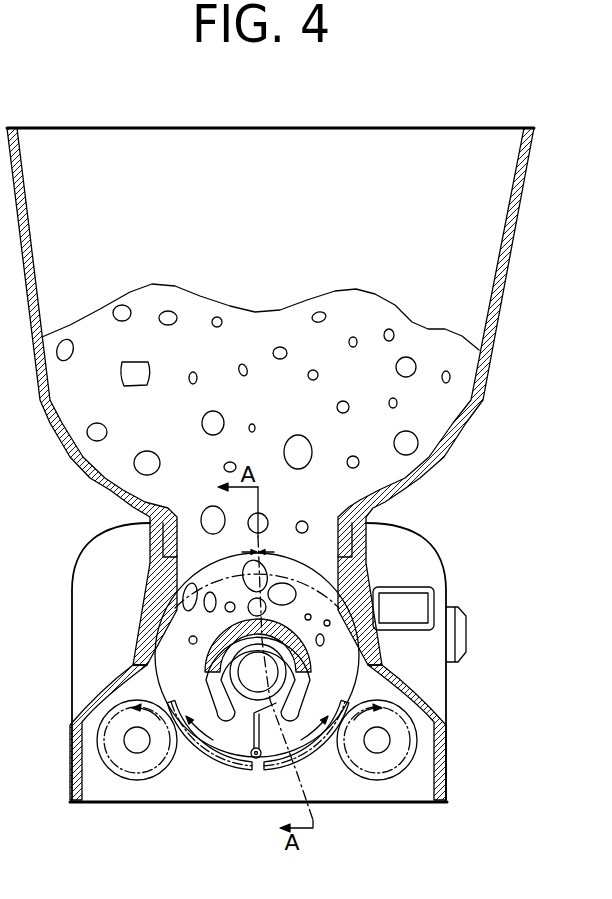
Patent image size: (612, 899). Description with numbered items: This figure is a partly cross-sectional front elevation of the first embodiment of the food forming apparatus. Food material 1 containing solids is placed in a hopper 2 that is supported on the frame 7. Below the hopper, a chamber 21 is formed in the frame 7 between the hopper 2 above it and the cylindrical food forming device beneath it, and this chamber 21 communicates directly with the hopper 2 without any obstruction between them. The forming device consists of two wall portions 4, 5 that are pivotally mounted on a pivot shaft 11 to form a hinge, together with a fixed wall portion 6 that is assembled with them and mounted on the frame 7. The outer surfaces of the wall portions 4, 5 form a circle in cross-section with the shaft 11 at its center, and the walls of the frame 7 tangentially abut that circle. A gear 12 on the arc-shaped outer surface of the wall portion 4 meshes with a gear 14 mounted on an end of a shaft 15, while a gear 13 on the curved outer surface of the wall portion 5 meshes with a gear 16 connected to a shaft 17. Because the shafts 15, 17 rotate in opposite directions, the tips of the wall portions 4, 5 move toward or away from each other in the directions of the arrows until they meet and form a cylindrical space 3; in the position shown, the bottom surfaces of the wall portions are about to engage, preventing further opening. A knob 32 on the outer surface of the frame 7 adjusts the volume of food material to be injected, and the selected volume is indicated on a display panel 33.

The food material 1 is at (358, 290).
The hopper 2 is at (527, 186).
The cylindrical space 3 is at (205, 597).
The wall portion 4 is at (238, 744).
The wall portion 5 is at (268, 748).
The wall portion 6 is at (200, 652).
The frame 7 is at (163, 611).
The pivot shaft 11 is at (270, 674).
The gear 12 is at (213, 764).
The gear 13 is at (320, 754).
The gear 14 is at (142, 766).
The shaft 15 is at (132, 745).
The gear 16 is at (380, 768).
The shaft 17 is at (378, 745).
The chamber 21 is at (141, 509).
The knob 32 is at (465, 633).
The display panel 33 is at (416, 584).